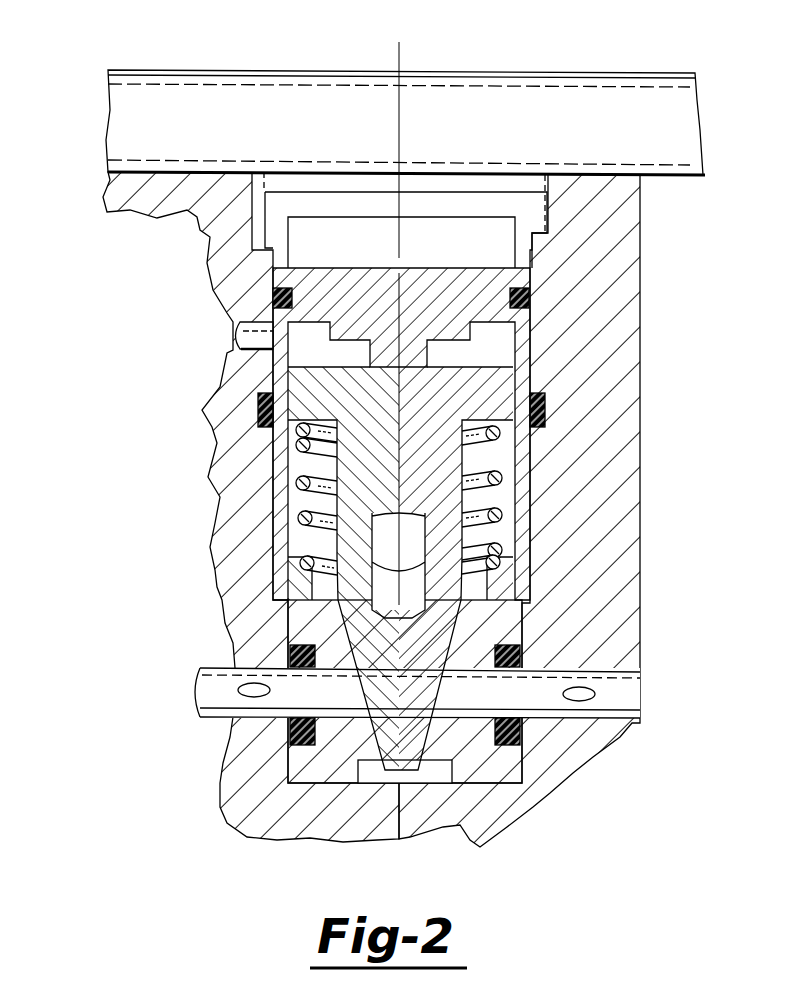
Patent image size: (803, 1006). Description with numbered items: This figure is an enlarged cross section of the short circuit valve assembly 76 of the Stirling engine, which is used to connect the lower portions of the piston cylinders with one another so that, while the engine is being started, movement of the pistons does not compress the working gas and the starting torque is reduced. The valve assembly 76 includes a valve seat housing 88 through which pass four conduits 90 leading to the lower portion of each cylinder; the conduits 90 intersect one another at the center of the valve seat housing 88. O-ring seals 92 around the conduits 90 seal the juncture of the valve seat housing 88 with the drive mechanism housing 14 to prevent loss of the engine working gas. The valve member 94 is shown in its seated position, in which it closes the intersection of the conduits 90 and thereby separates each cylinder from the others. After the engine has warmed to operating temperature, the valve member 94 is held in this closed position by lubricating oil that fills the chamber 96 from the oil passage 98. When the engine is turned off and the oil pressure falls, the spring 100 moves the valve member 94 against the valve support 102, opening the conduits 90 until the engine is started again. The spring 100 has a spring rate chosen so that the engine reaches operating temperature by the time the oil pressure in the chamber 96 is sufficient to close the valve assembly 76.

The drive mechanism housing 14 is at (625, 602).
The short circuit valve assembly 76 is at (572, 128).
The valve seat housing 88 is at (342, 750).
The conduits 90 is at (235, 714).
The O-ring seals 92 is at (290, 735).
The valve member 94 is at (373, 643).
The chamber 96 is at (318, 338).
The oil passage 98 is at (250, 320).
The spring 100 is at (300, 492).
The valve support 102 is at (432, 283).